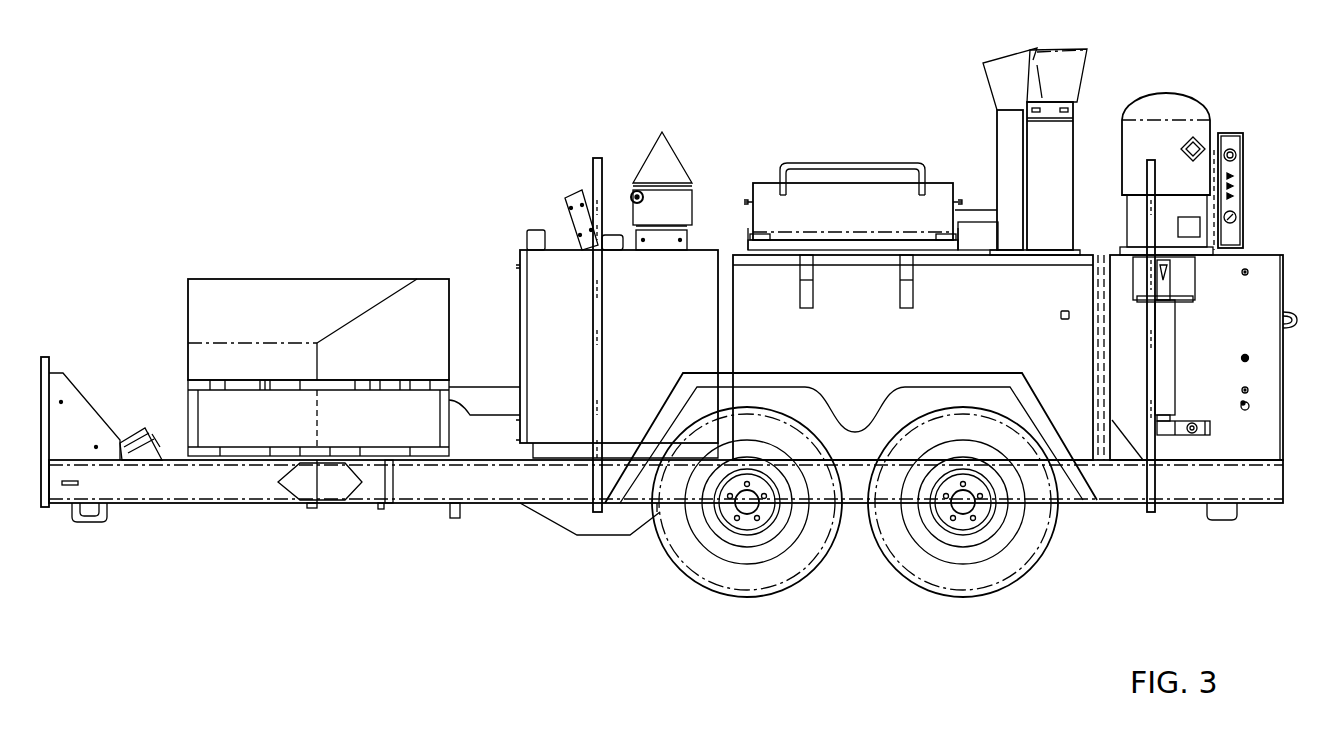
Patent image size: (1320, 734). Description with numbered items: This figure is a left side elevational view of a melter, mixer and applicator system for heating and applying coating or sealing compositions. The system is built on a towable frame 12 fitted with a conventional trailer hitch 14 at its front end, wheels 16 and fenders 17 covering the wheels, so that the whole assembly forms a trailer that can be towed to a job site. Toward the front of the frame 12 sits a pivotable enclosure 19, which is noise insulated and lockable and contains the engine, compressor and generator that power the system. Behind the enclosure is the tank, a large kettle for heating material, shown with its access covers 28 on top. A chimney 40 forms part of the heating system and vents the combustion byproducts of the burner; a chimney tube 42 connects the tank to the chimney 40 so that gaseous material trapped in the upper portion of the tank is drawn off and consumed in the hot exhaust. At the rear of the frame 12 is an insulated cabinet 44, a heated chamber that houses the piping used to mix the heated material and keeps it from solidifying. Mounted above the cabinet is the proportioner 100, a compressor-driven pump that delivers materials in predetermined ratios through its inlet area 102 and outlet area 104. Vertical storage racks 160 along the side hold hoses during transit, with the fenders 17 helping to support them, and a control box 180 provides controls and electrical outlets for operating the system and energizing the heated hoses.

The frame 12 is at (487, 492).
The trailer hitch 14 is at (86, 540).
The wheels 16 is at (690, 566).
The fenders 17 is at (875, 404).
The pivotable enclosure 19 is at (291, 329).
The access covers 28 is at (868, 220).
The chimney 40 is at (1062, 174).
The chimney tube 42 is at (975, 222).
The insulated cabinet 44 is at (1240, 327).
The proportioner 100 is at (1187, 120).
The inlet area 102 is at (1191, 452).
The outlet area 104 is at (1200, 275).
The storage racks 160 is at (592, 176).
The control box 180 is at (1240, 143).